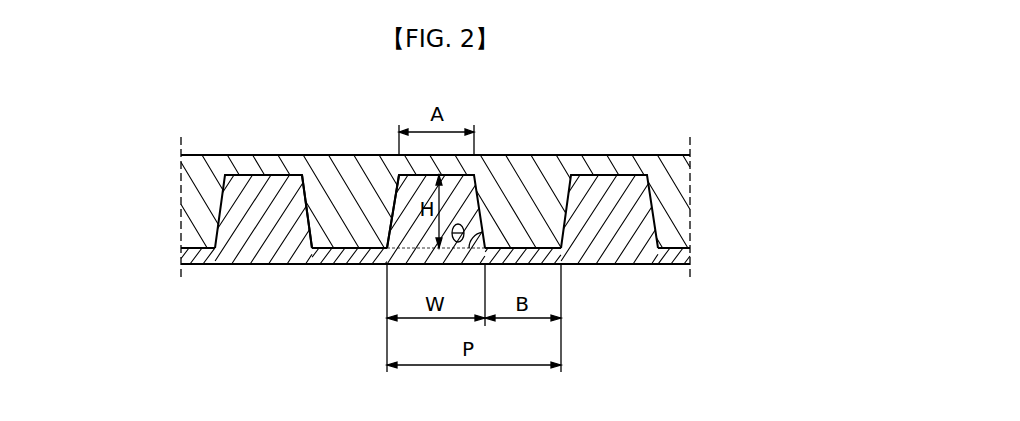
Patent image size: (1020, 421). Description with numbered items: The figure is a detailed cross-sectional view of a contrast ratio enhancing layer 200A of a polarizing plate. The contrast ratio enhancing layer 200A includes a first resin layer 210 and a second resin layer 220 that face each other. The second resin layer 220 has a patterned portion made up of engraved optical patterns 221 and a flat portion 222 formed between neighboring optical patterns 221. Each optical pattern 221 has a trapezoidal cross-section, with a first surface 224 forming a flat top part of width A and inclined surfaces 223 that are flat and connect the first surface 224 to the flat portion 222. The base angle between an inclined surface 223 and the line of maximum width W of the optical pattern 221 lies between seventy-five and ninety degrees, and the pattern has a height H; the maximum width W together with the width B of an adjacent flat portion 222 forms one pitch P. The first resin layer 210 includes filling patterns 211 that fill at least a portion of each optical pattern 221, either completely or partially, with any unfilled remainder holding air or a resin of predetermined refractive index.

The contrast ratio enhancing layer 200A is at (700, 155).
The first resin layer 210 is at (190, 254).
The filling pattern 211 is at (250, 220).
The second resin layer 220 is at (190, 206).
The optical pattern 221 is at (298, 207).
The flat portion 222 is at (345, 258).
The inclined surface 223 is at (397, 212).
The first surface 224 is at (268, 175).